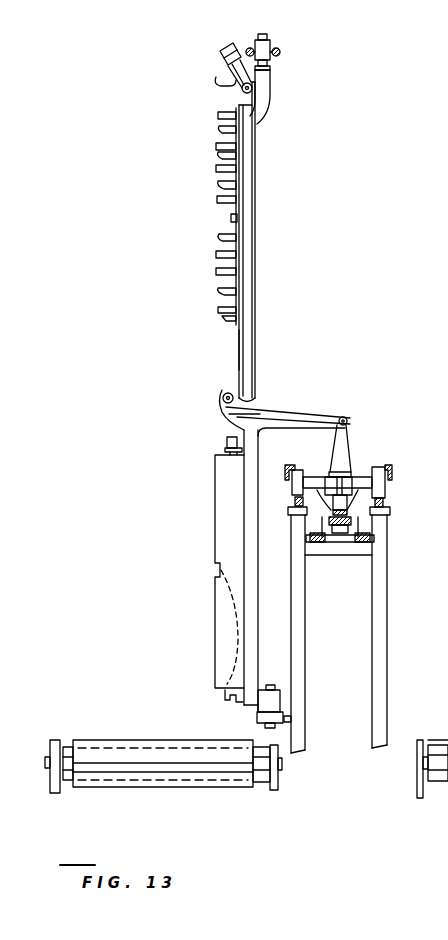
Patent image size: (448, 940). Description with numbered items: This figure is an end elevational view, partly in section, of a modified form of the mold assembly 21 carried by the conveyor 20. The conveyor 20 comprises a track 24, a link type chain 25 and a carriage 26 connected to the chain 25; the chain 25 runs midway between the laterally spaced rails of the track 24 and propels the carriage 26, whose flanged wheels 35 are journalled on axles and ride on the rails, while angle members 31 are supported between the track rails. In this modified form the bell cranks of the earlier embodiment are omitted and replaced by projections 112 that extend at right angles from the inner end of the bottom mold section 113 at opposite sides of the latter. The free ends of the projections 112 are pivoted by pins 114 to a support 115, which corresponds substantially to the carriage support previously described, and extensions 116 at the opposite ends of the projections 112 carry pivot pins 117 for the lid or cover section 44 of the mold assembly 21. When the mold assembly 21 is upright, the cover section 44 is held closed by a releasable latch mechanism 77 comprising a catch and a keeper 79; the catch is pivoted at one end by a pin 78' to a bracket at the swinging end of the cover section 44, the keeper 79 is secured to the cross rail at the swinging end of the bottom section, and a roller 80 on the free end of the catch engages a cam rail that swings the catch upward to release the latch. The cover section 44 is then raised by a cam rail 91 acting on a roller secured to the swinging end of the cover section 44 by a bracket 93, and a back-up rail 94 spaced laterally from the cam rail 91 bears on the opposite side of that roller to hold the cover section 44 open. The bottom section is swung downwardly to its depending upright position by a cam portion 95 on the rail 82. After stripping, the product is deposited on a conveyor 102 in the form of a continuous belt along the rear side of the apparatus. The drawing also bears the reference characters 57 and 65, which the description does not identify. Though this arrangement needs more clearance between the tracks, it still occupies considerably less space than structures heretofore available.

The conveyor 20 is at (366, 462).
The mold assembly 21 is at (238, 347).
The track 24 is at (390, 503).
The link type chain 25 is at (338, 537).
The carriage 26 is at (386, 491).
The angle members 31 is at (316, 533).
The flanged wheels 35 is at (388, 478).
The cover section 44 is at (259, 306).
The fin plate 57 is at (231, 218).
The fins 65 is at (216, 155).
The releasable latch mechanism 77 is at (216, 79).
The pin 78' is at (219, 104).
The keeper 79 is at (231, 88).
The roller 80 is at (223, 57).
The rail 82 is at (283, 714).
The cam rail 91 is at (247, 48).
The bracket 93 is at (265, 111).
The back-up rail 94 is at (281, 52).
The cam portion 95 is at (292, 720).
The conveyor 102 is at (123, 750).
The projections 112 is at (307, 412).
The bottom mold section 113 is at (215, 518).
The pins 114 is at (347, 416).
The support 115 is at (347, 478).
The extensions 116 is at (223, 412).
The pivot pins 117 is at (223, 398).